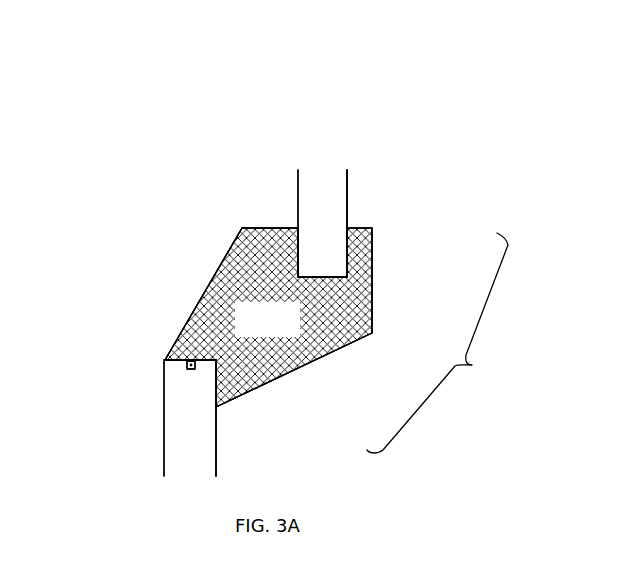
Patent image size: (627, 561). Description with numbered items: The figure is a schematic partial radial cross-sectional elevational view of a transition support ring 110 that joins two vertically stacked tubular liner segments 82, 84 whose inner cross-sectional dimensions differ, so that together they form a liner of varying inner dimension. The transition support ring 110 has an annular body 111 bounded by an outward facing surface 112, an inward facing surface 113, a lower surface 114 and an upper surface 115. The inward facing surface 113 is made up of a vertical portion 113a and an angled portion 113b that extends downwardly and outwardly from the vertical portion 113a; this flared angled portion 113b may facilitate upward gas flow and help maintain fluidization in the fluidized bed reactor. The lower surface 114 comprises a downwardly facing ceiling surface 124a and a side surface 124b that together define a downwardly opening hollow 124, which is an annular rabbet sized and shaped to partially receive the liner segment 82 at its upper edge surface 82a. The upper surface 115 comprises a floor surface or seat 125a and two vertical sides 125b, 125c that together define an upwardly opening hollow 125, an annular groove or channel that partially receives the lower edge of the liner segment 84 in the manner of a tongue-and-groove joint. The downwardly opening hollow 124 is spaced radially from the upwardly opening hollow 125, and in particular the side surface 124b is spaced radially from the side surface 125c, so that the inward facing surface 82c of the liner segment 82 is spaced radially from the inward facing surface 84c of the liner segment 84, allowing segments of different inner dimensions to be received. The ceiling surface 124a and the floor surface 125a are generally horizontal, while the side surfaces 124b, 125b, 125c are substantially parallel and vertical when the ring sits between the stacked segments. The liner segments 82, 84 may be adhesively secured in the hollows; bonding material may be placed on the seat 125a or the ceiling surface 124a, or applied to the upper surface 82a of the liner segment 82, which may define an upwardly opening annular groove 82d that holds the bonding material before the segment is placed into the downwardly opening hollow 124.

The transition support ring 110 is at (259, 147).
The annular body 111 is at (268, 317).
The outward facing surface 112 is at (217, 272).
The inward facing surface 113 is at (439, 343).
The vertical portion 113a is at (373, 275).
The angled portion 113b is at (268, 383).
The lower surface 114 is at (170, 363).
The upper surface 115 is at (268, 227).
The downwardly opening hollow 124 is at (194, 403).
The ceiling surface 124a is at (202, 373).
The side surface 124b is at (213, 383).
The upwardly opening hollow 125 is at (323, 225).
The floor surface 125a is at (333, 277).
The side surface 125b is at (298, 241).
The side surface 125c is at (342, 242).
The liner segment 82 is at (163, 417).
The upper edge surface 82a is at (177, 360).
The inward facing surface 82c is at (219, 440).
The annular groove 82d is at (192, 370).
The liner segment 84 is at (347, 198).
The inward facing surface 84c is at (347, 200).